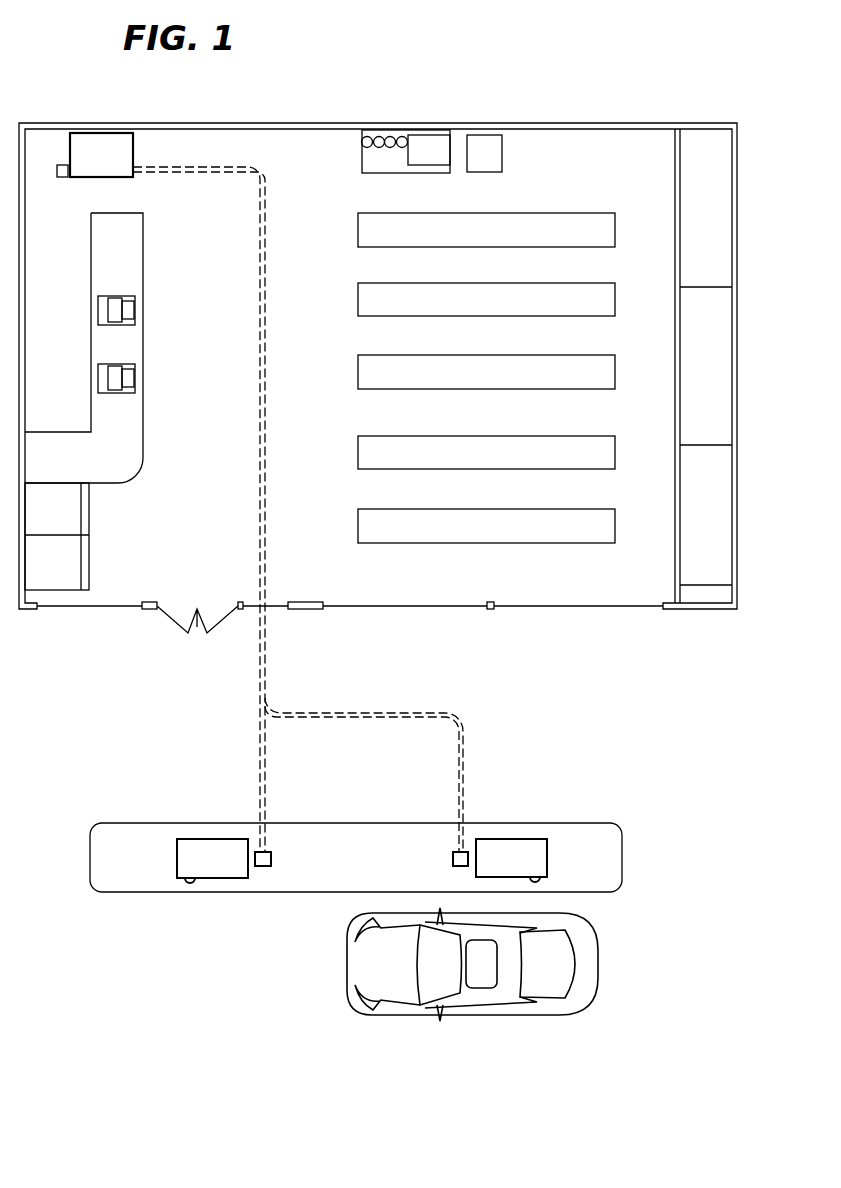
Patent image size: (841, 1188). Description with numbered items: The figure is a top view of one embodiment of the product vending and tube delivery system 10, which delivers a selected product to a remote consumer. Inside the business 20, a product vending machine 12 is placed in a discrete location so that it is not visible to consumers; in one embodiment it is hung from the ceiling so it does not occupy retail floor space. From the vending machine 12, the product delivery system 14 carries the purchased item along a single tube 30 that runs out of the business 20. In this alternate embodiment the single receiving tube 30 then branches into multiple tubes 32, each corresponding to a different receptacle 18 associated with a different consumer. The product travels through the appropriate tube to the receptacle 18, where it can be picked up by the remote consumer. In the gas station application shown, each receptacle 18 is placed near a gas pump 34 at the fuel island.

The product vending and tube delivery system 10 is at (228, 718).
The product vending machine 12 is at (93, 132).
The product delivery system 14 is at (265, 168).
The product receptacle 18 is at (258, 852).
The business 20 is at (593, 608).
The tube 30 is at (268, 658).
The tubes 32 is at (258, 748).
The gas pump 34 is at (186, 848).